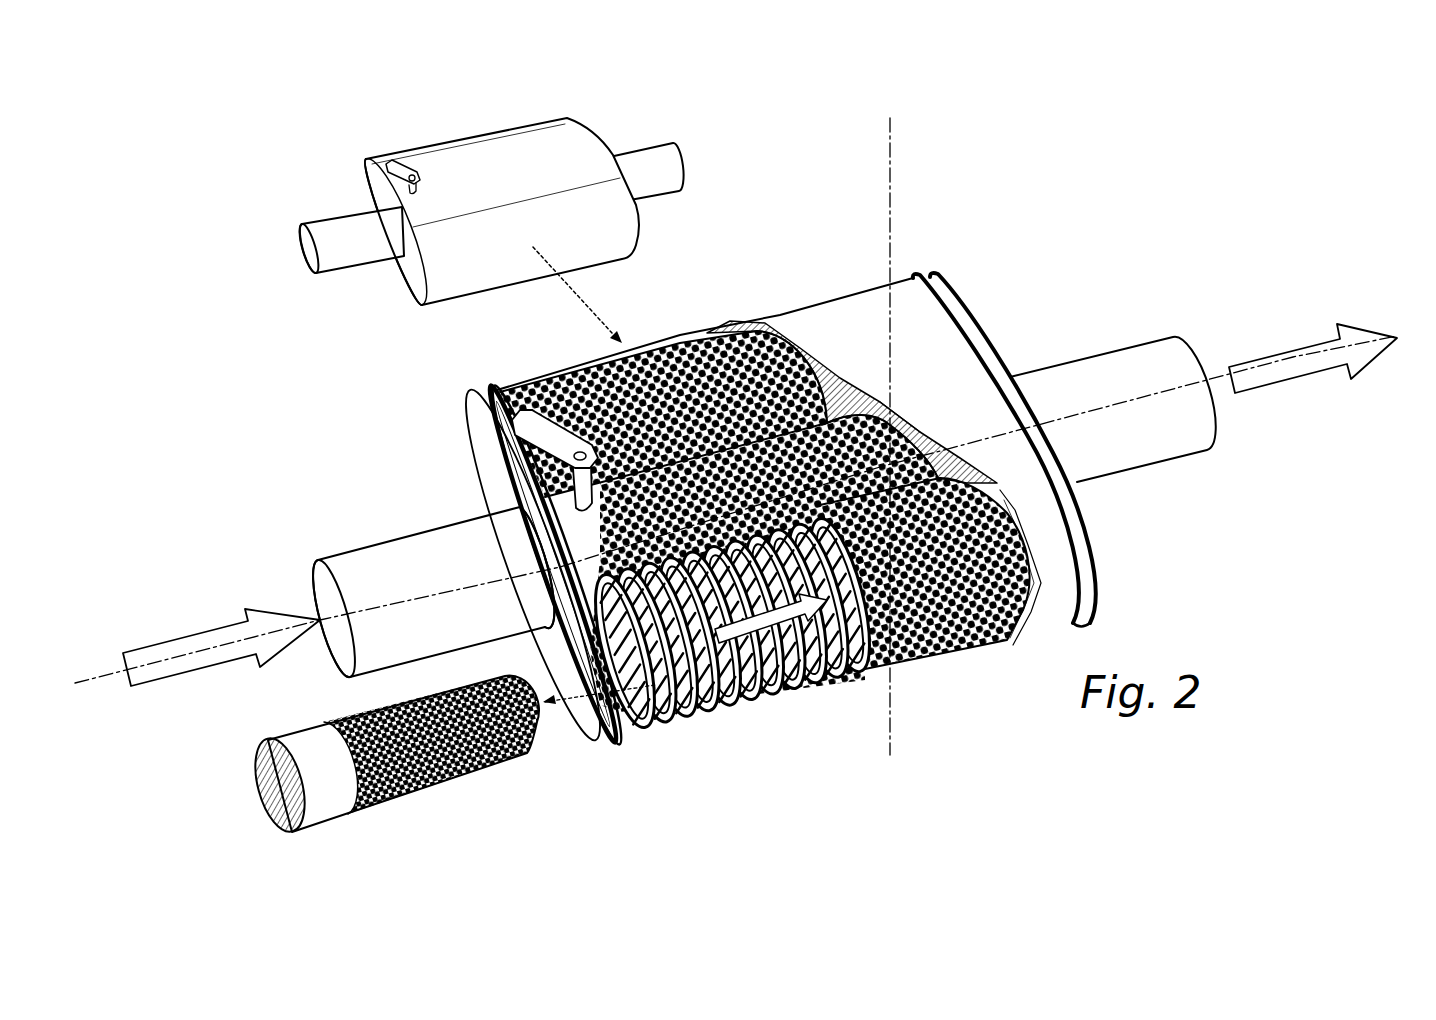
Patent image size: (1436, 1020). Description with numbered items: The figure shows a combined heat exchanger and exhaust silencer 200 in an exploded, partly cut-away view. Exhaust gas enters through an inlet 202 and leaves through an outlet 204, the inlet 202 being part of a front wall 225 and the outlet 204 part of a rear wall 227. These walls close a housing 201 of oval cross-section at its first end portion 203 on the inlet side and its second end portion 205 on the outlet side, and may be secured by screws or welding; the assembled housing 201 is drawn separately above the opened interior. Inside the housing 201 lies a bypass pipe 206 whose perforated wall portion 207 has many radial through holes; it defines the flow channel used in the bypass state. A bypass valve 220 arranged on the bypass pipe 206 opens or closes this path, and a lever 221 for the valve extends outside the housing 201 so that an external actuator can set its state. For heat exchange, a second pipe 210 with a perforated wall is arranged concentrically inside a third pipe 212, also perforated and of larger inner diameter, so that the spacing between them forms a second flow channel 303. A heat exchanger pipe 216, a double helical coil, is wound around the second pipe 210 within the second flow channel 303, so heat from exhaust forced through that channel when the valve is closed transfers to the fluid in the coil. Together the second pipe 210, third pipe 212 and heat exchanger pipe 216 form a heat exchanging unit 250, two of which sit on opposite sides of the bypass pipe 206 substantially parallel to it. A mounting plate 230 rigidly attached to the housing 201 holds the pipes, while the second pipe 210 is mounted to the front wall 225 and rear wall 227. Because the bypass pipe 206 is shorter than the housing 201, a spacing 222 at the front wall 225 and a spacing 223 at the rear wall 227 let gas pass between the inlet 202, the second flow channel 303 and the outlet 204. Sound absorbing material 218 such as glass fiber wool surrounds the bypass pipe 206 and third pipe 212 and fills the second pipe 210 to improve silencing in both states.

The combined heat exchanger and exhaust silencer 200 is at (972, 190).
The housing 201 is at (520, 128).
The inlet 202 is at (312, 544).
The first end portion 203 is at (357, 150).
The outlet 204 is at (1185, 310).
The second end portion 205 is at (575, 100).
The bypass pipe 206 is at (726, 466).
The perforated wall portion 207 is at (700, 430).
The second pipe 210 is at (655, 712).
The third pipe 212 is at (762, 372).
The heat exchanger pipe 216 is at (833, 677).
The sound absorbing material 218 is at (933, 353).
The bypass valve 220 is at (522, 469).
The lever 221 is at (547, 433).
The spacing 222 is at (556, 566).
The spacing 223 is at (1047, 438).
The front wall 225 is at (590, 717).
The rear wall 227 is at (1100, 553).
The mounting plate 230 is at (470, 393).
The heat exchanging unit 250 is at (676, 273).
The second flow channel 303 is at (783, 709).